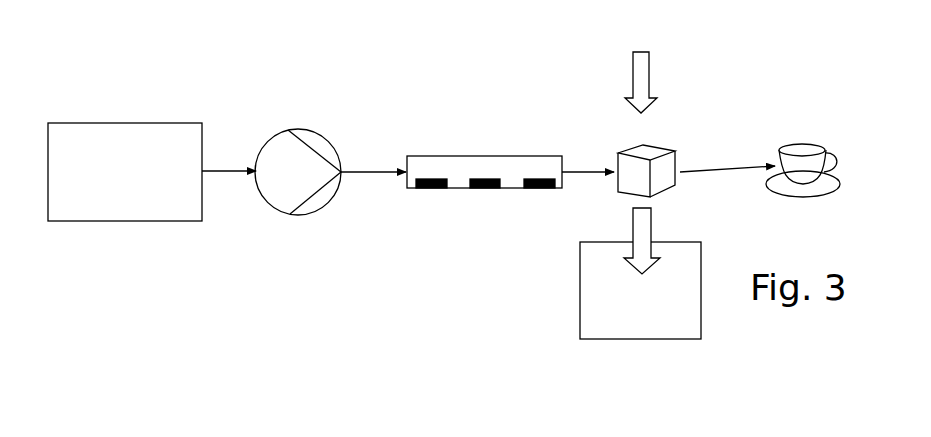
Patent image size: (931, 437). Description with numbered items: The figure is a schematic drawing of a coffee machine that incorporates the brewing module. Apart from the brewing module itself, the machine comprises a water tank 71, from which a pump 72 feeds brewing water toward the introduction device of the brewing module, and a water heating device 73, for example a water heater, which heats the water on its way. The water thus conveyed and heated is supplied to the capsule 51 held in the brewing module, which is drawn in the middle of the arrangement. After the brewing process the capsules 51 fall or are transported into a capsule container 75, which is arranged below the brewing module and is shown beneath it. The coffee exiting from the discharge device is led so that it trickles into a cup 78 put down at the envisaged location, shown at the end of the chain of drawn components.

The water tank 71 is at (165, 190).
The pump 72 is at (302, 168).
The water heating device 73 is at (463, 157).
The capsule 51 is at (647, 167).
The cup 78 is at (797, 168).
The capsule container 75 is at (603, 293).